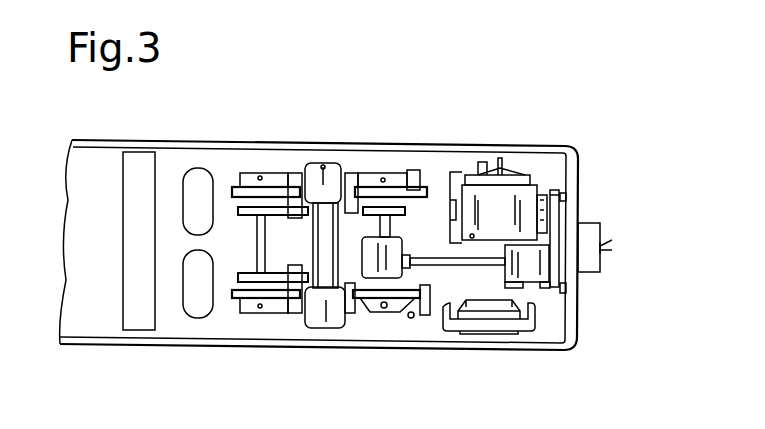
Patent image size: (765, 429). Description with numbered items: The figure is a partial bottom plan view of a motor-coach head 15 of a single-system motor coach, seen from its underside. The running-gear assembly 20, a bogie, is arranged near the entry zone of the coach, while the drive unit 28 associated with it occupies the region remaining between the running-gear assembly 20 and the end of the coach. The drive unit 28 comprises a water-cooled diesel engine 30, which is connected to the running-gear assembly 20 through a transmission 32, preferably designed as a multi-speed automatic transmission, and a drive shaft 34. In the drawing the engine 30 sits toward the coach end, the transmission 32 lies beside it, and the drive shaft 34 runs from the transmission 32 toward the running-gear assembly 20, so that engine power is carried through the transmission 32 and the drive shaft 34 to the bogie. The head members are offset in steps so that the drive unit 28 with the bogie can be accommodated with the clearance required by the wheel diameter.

The motor-coach head 15 is at (437, 134).
The running-gear assembly 20 is at (343, 162).
The water-cooled diesel engine 30 is at (513, 172).
The drive unit 28 is at (555, 184).
The transmission 32 is at (543, 277).
The drive shaft 34 is at (447, 267).